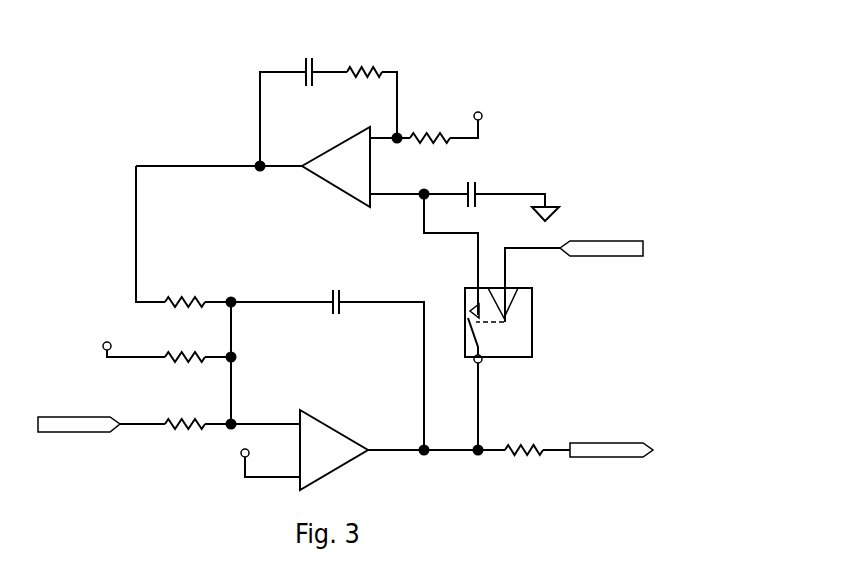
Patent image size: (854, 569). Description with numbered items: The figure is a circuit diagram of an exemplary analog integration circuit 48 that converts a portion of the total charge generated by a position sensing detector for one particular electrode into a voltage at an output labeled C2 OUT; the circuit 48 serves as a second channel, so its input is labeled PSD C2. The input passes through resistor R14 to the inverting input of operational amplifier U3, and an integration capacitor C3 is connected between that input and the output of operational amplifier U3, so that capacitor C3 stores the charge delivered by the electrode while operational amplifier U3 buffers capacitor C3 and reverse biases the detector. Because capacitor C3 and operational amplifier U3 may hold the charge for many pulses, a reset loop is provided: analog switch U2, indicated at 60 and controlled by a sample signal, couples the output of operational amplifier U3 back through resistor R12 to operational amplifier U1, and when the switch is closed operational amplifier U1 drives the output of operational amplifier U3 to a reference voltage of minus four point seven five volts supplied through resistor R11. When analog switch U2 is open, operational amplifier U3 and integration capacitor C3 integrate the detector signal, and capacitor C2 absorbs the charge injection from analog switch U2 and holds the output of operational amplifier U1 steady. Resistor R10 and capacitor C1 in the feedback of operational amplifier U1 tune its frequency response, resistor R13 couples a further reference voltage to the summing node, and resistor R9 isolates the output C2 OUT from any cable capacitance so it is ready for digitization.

The analog integration circuit 48 is at (636, 103).
The switch 60 is at (567, 304).
The operational amplifier U1 is at (336, 166).
The analog switch U2 is at (500, 319).
The operational amplifier U3 is at (334, 450).
The capacitor C1 is at (320, 68).
The capacitor C2 is at (481, 191).
The integration capacitor C3 is at (348, 295).
The resistor R9 is at (524, 442).
The resistor R10 is at (364, 64).
The resistor R11 is at (430, 131).
The resistor R12 is at (185, 294).
The resistor R13 is at (185, 349).
The resistor R14 is at (185, 416).